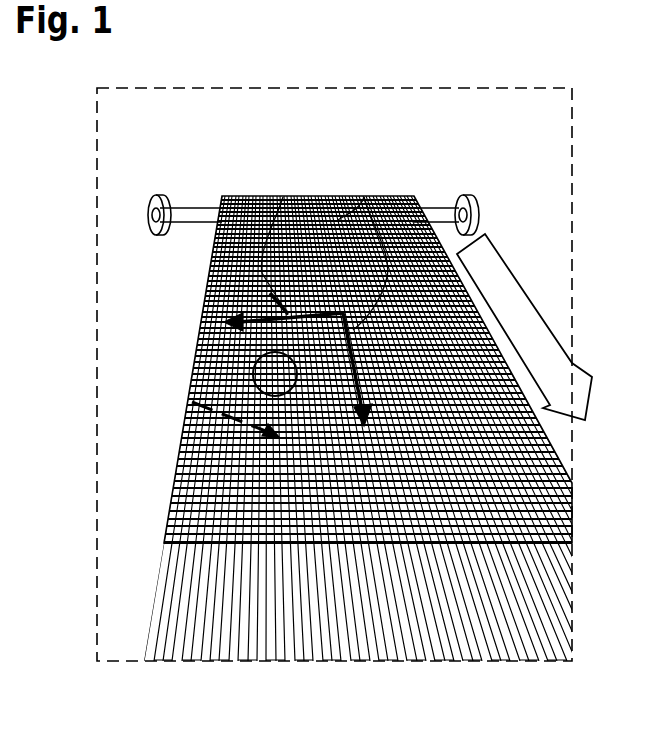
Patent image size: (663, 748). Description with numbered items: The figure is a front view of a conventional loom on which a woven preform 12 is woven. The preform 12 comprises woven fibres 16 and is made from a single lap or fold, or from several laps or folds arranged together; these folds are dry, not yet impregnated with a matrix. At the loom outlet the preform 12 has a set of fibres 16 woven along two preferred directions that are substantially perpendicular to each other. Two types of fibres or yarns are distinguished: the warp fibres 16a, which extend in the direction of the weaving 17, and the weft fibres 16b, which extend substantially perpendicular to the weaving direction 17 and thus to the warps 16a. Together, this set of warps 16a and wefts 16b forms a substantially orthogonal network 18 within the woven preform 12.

The woven preform 12 is at (192, 402).
The fibres 16 is at (257, 567).
The warp fibres 16a is at (364, 197).
The weft fibres 16b is at (283, 197).
The weaving direction 17 is at (517, 303).
The orthogonal network 18 is at (205, 346).